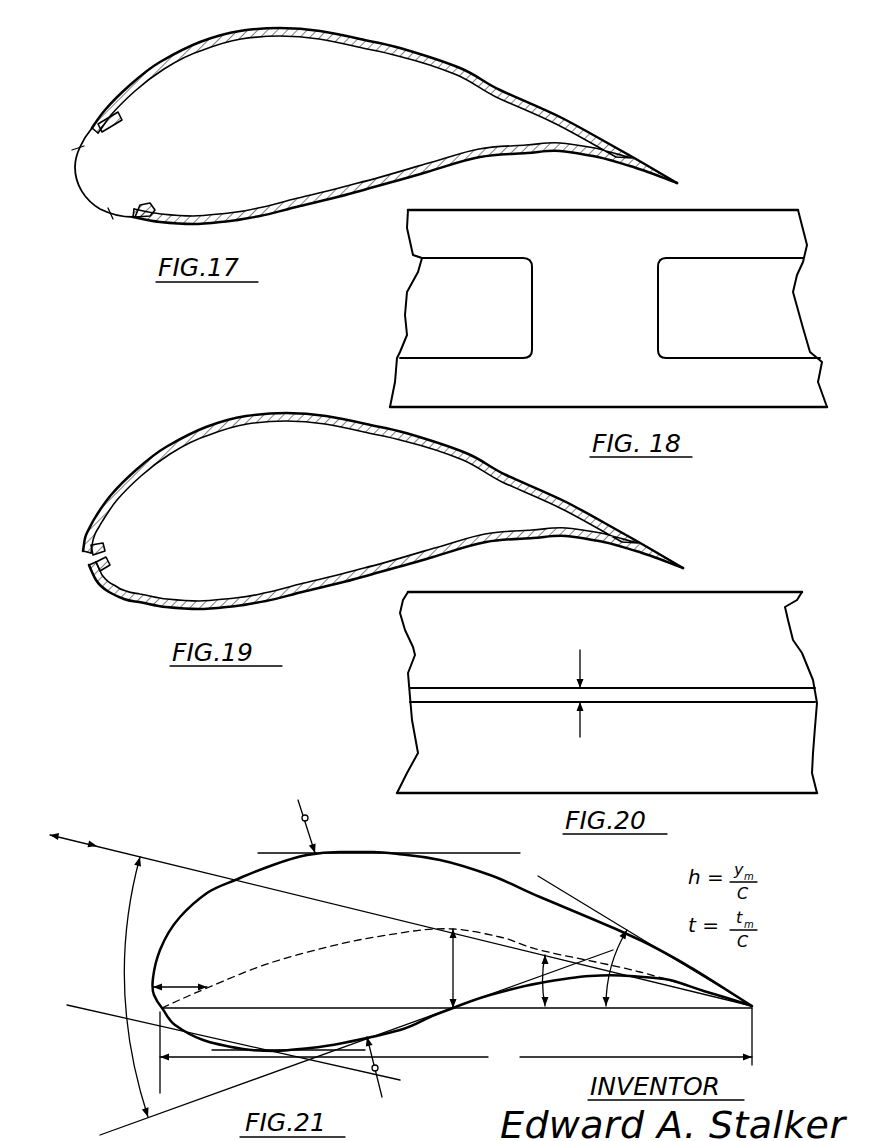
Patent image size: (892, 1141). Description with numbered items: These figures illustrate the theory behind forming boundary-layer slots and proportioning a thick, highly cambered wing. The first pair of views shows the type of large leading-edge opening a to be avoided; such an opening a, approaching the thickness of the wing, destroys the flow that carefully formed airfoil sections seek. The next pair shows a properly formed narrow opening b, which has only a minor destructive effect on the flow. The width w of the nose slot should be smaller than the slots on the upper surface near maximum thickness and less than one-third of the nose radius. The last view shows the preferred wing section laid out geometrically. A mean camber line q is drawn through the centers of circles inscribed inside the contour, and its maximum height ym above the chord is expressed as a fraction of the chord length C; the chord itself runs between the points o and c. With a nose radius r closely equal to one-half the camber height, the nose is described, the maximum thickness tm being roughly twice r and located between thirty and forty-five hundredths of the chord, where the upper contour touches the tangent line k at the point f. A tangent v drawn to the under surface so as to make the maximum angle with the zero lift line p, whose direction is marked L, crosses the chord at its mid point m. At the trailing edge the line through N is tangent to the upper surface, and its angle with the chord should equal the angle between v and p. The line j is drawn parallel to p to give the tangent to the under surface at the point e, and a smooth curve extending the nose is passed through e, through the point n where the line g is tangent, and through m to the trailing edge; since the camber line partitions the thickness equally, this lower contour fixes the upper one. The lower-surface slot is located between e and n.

In FIG. 17, the opening a is at (118, 168).
In FIG. 18, the opening a is at (465, 305).
In FIG. 19, the opening b is at (86, 581).
In FIG. 20, the opening b is at (430, 693).
In FIG. 20, the width of nose slot w is at (582, 697).
In FIG. 21, the zero lift line L is at (401, 911).
In FIG. 21, the zero lift line p is at (353, 909).
In FIG. 21, the tangent line at maximum thickness k is at (357, 853).
In FIG. 21, the tangent point f is at (297, 853).
In FIG. 21, the maximum thickness tm is at (315, 823).
In FIG. 21, the mean camber line q is at (393, 934).
In FIG. 21, the maximum height of mean camber line ym is at (445, 968).
In FIG. 21, the chord length C is at (456, 1050).
In FIG. 21, the chord end point o is at (147, 1008).
In FIG. 21, the chord end point c is at (758, 996).
In FIG. 21, the mid point of chord m is at (449, 1025).
In FIG. 21, the nose radius r is at (180, 979).
In FIG. 21, the tangent line to upper surface N is at (592, 907).
In FIG. 21, the tangent to under surface v is at (122, 1128).
In FIG. 21, the tangent line parallel to zero lift line j is at (86, 1013).
In FIG. 21, the point of tangency on under surface e is at (205, 1040).
In FIG. 21, the point of tangency of line g n is at (277, 1046).
In FIG. 21, the tangent line to lower surface g is at (318, 1043).